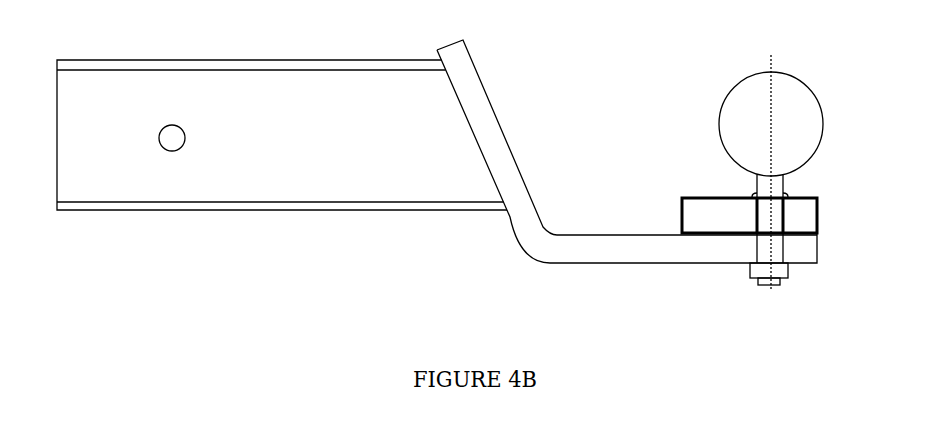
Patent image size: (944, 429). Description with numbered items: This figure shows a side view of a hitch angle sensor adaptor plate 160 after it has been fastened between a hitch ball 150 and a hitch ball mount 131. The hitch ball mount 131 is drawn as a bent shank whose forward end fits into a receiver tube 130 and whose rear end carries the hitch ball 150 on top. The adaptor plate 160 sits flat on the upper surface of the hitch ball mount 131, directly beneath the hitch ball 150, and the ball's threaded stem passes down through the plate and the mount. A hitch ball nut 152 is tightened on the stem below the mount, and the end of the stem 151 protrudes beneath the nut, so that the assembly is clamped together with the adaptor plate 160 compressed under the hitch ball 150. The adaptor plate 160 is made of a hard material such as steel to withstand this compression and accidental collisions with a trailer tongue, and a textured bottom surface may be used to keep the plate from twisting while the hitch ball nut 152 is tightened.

The receiver tube 130 is at (165, 63).
The hitch ball mount 131 is at (607, 240).
The hitch ball 150 is at (732, 115).
The ball bolt end 151 is at (767, 287).
The hitch ball nut 152 is at (792, 273).
The adaptor plate 160 is at (819, 217).